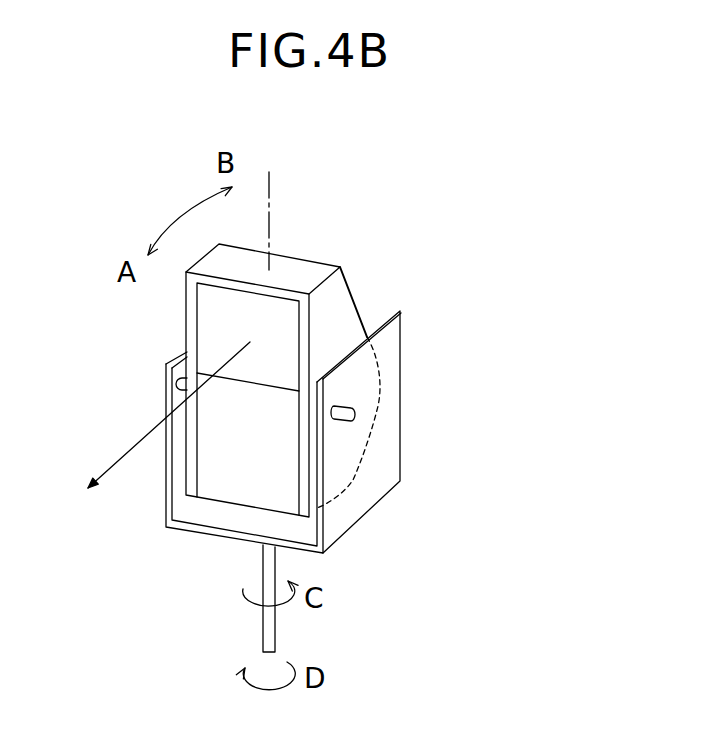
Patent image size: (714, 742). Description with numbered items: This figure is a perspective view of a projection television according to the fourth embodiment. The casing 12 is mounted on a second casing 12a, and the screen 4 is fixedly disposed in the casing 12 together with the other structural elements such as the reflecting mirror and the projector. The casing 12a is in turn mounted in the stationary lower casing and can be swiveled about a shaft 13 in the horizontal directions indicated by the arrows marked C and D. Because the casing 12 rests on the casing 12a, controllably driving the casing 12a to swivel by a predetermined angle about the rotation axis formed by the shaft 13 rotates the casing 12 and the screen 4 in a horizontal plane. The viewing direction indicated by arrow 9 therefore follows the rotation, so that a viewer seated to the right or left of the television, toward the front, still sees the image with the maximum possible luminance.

The screen 4 is at (212, 313).
The optical axis direction arrow 9 is at (128, 450).
The casing 12 is at (350, 288).
The casing 12a is at (402, 347).
The shaft 13 is at (263, 633).